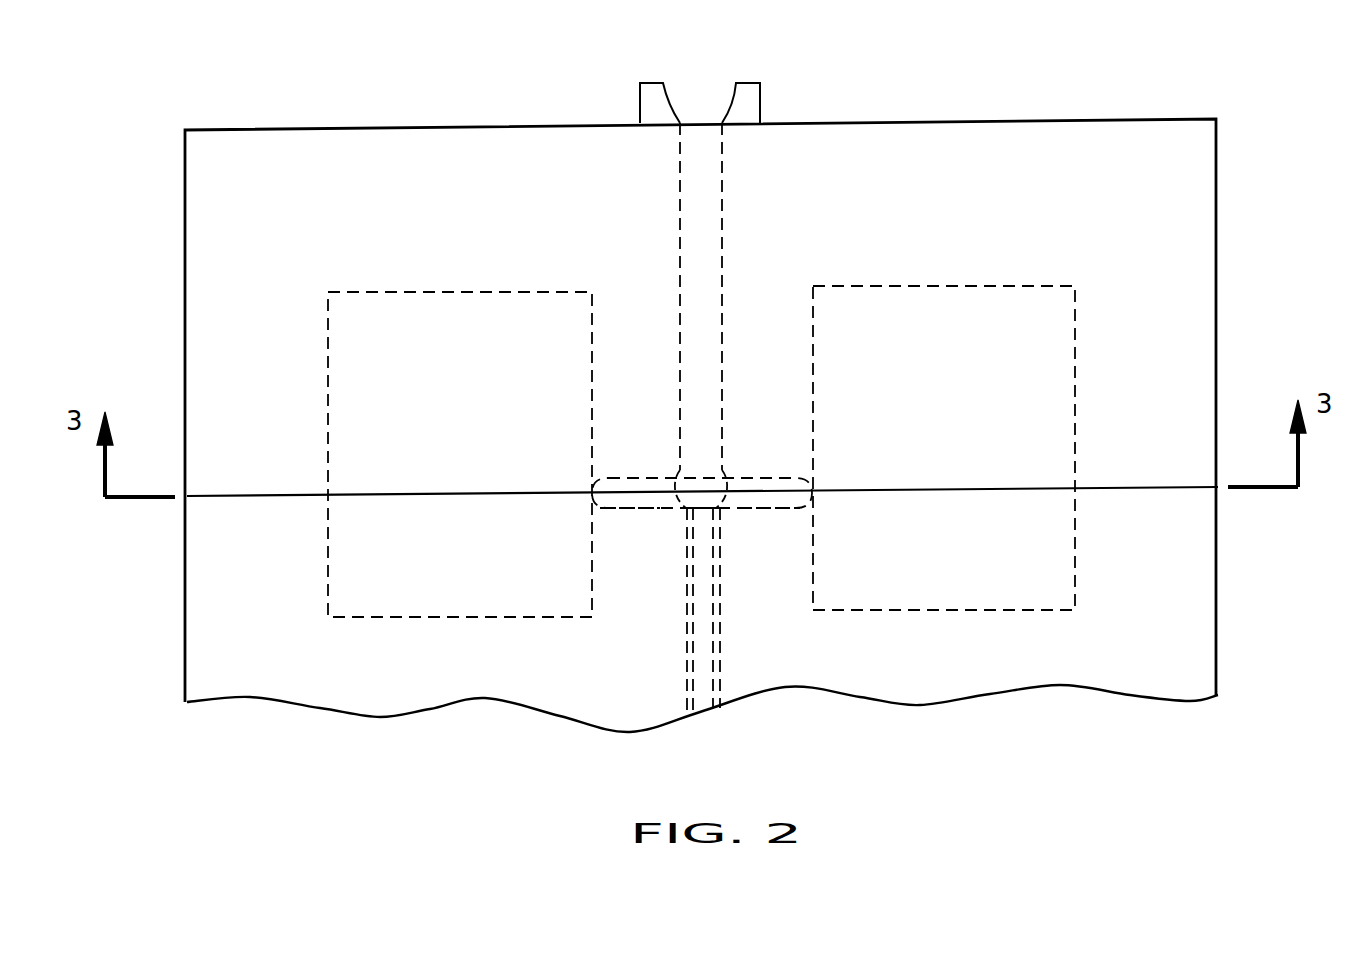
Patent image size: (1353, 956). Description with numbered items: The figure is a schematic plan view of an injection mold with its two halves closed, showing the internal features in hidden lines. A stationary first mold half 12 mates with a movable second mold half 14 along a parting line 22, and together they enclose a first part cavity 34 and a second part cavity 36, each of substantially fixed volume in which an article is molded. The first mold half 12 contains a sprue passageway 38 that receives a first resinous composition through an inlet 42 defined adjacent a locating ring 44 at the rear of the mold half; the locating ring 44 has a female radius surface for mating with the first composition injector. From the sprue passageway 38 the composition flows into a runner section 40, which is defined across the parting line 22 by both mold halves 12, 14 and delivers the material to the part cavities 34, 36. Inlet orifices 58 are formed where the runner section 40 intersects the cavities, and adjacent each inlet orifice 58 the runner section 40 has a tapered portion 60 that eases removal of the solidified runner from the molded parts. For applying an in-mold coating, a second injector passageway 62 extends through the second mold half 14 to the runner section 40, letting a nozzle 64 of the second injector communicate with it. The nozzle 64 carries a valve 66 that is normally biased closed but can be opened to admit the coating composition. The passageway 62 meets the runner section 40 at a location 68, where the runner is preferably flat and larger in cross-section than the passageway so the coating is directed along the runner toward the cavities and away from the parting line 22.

The first mold half 12 is at (1182, 247).
The second mold half 14 is at (1175, 618).
The parting line 22 is at (1112, 487).
The first part cavity 34 is at (950, 300).
The second part cavity 36 is at (437, 305).
The sprue passageway 38 is at (700, 212).
The runner section 40 is at (755, 497).
The inlet 42 is at (688, 120).
The locating ring 44 is at (748, 92).
The inlet orifice 58 is at (815, 485).
The tapered portion 60 is at (600, 508).
The second injector passageway 62 is at (720, 578).
The nozzle 64 is at (687, 588).
The valve 66 is at (700, 660).
The location 68 is at (703, 500).